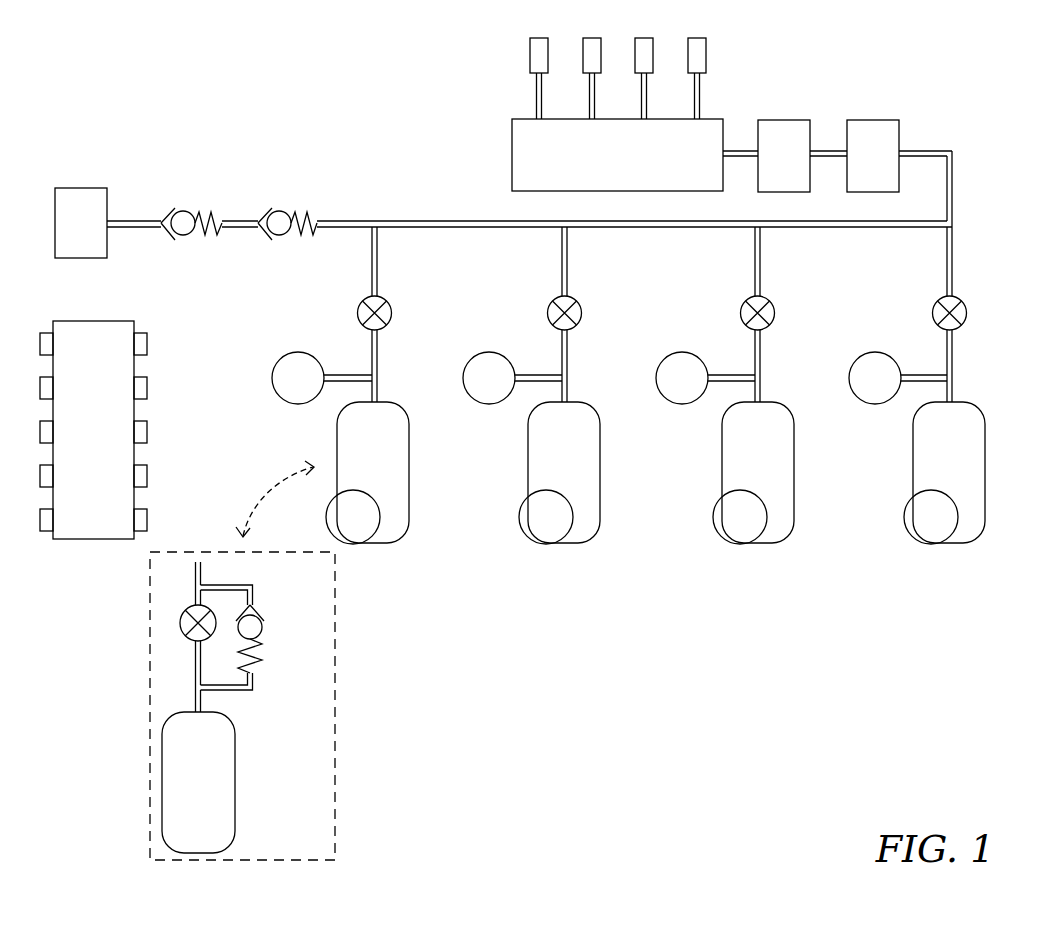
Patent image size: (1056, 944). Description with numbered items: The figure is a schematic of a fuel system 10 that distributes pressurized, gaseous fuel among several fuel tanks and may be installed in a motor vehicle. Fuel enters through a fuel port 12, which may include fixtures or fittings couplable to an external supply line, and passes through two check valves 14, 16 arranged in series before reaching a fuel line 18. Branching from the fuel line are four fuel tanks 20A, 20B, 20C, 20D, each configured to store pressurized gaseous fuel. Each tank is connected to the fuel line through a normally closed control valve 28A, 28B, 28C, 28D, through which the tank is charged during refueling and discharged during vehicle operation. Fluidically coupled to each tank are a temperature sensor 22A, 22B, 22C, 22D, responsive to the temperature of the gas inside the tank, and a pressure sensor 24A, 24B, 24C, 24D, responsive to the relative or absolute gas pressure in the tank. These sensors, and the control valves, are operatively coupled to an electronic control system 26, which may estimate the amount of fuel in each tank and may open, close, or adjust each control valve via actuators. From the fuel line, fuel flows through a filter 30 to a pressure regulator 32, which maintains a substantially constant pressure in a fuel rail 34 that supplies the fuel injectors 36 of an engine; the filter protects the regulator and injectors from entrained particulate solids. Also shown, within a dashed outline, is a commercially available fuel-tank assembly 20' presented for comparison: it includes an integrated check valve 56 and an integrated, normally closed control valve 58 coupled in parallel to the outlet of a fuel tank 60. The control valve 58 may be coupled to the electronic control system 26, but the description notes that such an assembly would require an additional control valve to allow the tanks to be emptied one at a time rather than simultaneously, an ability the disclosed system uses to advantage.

The fuel system 10 is at (59, 112).
The fuel port 12 is at (70, 234).
The check valve 14 is at (186, 170).
The check valve 16 is at (283, 170).
The fuel line 18 is at (473, 220).
The fuel tank 20A is at (356, 482).
The fuel tank 20B is at (547, 482).
The fuel tank 20C is at (741, 482).
The fuel tank 20D is at (932, 482).
The fuel-tank assembly 20' is at (270, 660).
The temperature sensor 22A is at (336, 528).
The temperature sensor 22B is at (529, 528).
The temperature sensor 22C is at (723, 528).
The temperature sensor 22D is at (914, 528).
The pressure sensor 24A is at (281, 389).
The pressure sensor 24B is at (472, 389).
The pressure sensor 24C is at (665, 389).
The pressure sensor 24D is at (858, 389).
The electronic control system 26 is at (82, 444).
The control valve 28A is at (358, 304).
The control valve 28B is at (548, 304).
The control valve 28C is at (741, 304).
The control valve 28D is at (933, 304).
The filter 30 is at (862, 168).
The pressure regulator 32 is at (773, 168).
The fuel rail 34 is at (606, 168).
The fuel injectors 36 is at (503, 48).
The integrated check valve 56 is at (281, 631).
The normally closed control valve 58 is at (184, 612).
The fuel tank 60 is at (187, 792).